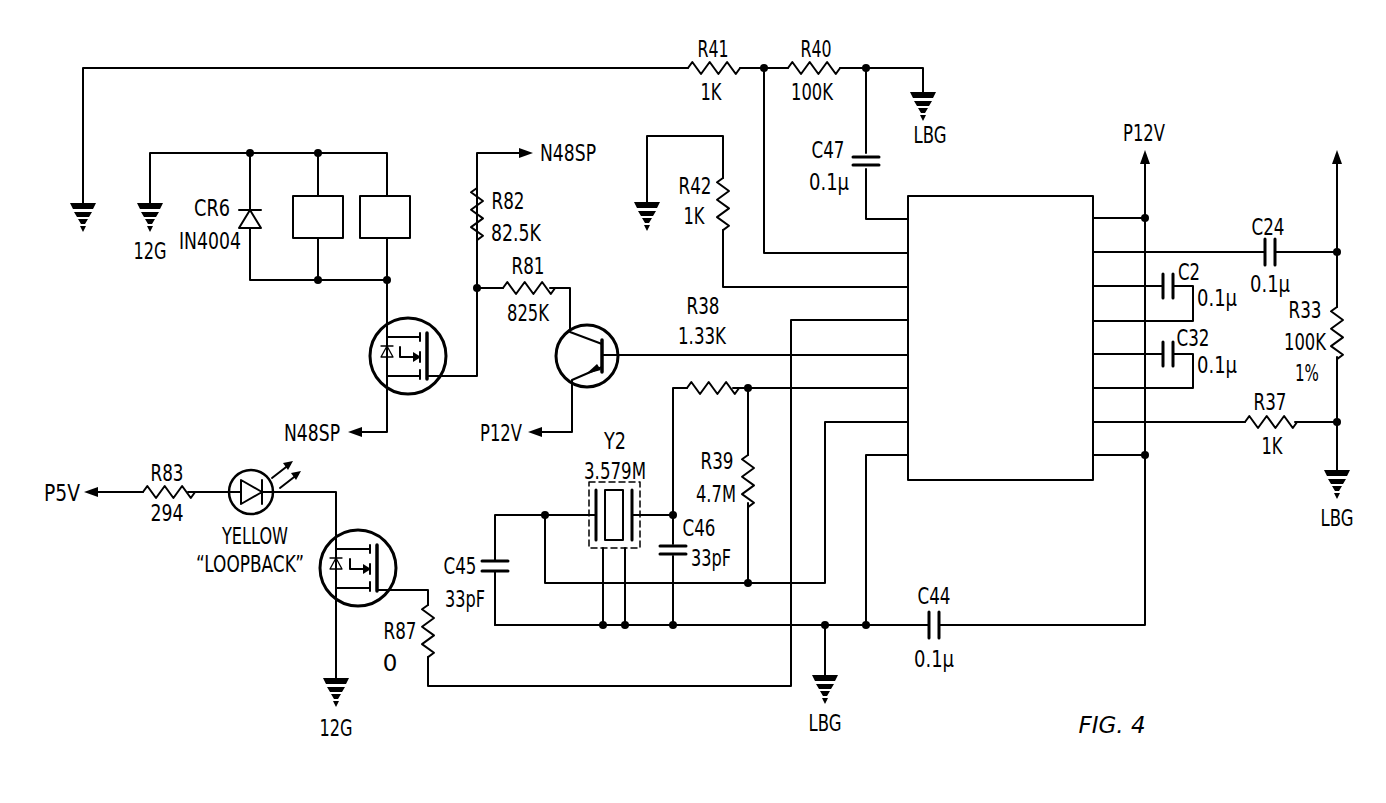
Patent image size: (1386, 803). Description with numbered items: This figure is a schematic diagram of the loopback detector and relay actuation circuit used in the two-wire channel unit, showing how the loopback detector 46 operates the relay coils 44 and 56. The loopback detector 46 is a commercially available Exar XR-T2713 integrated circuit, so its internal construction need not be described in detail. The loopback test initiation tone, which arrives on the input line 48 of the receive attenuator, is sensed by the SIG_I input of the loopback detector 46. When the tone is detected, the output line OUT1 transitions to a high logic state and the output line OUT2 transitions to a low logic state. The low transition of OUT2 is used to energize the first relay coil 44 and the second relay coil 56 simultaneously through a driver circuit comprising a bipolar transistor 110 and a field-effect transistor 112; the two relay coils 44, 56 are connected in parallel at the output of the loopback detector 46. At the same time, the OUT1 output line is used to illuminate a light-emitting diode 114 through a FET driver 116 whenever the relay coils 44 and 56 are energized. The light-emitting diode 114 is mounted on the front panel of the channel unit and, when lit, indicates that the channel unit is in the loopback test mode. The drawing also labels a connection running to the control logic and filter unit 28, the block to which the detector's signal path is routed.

The relay coil 44 is at (330, 196).
The second relay coil 56 is at (405, 196).
The field-effect transistor 112 is at (415, 318).
The bipolar transistor 110 is at (557, 366).
The light-emitting diode 114 is at (232, 478).
The FET driver 116 is at (325, 586).
The loopback detector 46 is at (922, 196).
The input line 48 is at (1337, 191).
The control logic and filter unit 28 is at (1289, 114).